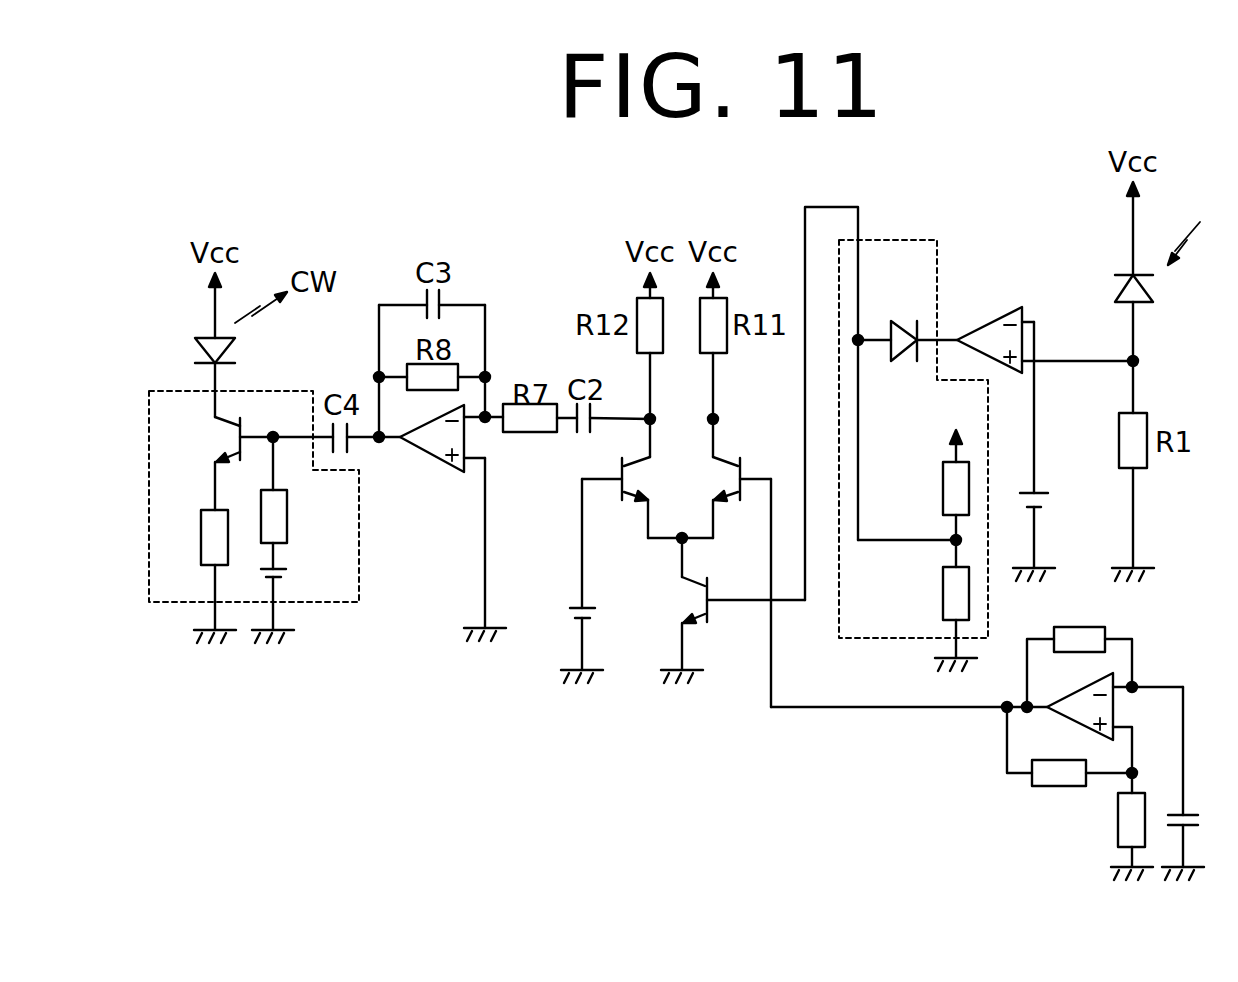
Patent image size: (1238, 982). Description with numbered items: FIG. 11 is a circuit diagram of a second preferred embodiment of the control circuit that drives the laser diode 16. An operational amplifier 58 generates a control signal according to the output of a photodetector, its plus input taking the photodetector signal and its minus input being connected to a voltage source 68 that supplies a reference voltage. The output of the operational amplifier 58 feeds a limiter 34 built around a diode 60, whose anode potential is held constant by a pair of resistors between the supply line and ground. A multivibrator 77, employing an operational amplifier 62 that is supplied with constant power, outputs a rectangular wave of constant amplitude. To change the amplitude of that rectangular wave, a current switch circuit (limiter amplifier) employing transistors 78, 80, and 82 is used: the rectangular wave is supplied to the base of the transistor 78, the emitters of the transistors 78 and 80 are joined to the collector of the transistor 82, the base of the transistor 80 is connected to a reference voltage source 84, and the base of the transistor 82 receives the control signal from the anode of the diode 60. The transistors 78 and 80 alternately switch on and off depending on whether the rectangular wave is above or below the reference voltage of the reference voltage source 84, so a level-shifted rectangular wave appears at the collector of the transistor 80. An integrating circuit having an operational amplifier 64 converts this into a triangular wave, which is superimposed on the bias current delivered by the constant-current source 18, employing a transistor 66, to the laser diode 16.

The laser diode 16 is at (236, 348).
The constant-current source 18 is at (257, 521).
The limiter 34 is at (913, 415).
The operational amplifier 58 is at (993, 318).
The diode 60 is at (903, 318).
The operational amplifier 62 is at (1072, 685).
The operational amplifier 64 is at (430, 456).
The transistor 66 is at (216, 432).
The voltage source 68 is at (1047, 485).
The multivibrator 77 is at (1084, 731).
The transistor 78 is at (713, 478).
The transistor 80 is at (645, 475).
The transistor 82 is at (685, 600).
The reference voltage source 84 is at (566, 611).